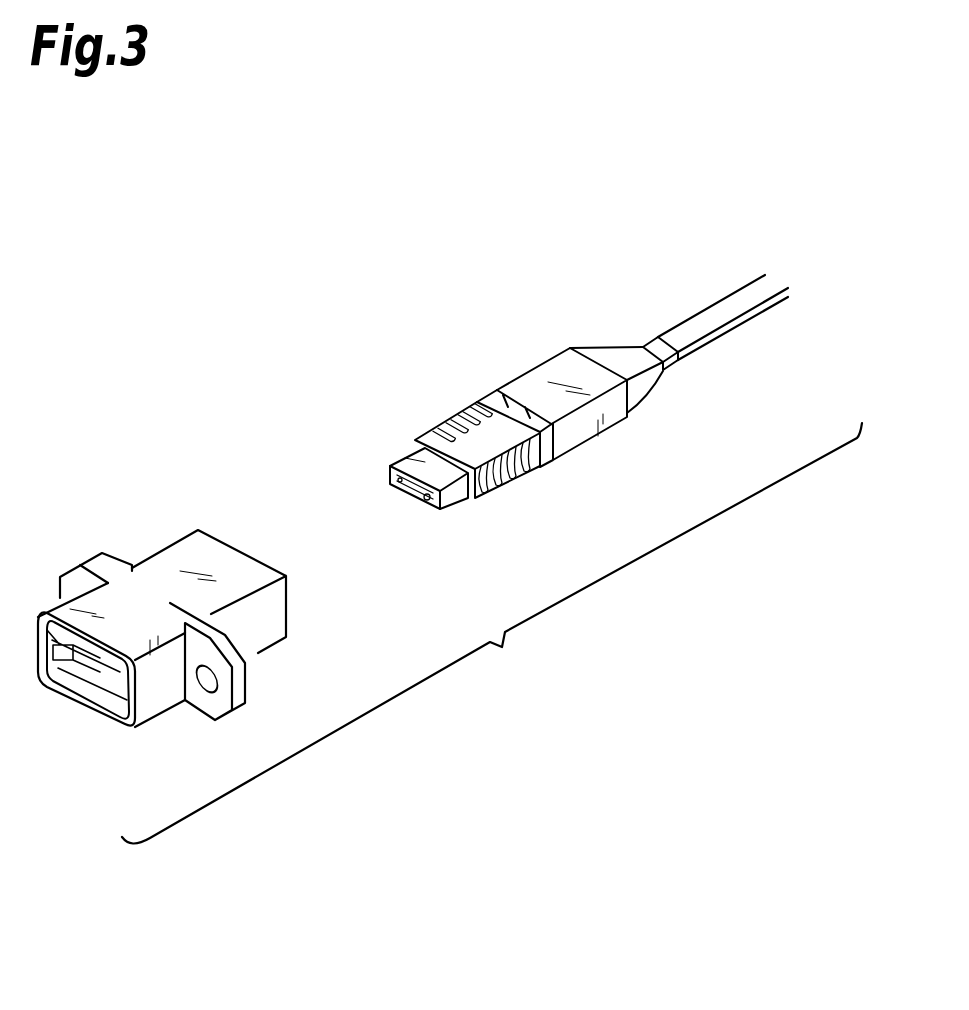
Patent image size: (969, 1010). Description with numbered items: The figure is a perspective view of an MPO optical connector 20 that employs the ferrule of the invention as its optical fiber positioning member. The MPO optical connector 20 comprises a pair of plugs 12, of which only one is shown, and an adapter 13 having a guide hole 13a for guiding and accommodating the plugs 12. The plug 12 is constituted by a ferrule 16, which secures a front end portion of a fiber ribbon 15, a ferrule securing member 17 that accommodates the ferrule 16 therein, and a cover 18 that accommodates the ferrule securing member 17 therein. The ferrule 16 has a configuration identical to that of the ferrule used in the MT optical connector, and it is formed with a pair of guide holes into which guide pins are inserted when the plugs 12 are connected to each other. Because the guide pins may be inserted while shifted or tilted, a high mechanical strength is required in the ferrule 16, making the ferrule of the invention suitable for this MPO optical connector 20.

The MPO optical connector 20 is at (387, 290).
The plug 12 is at (547, 330).
The adapter 13 is at (186, 540).
The guide hole 13a is at (110, 682).
The fiber ribbon 15 is at (713, 310).
The ferrule 16 is at (390, 481).
The ferrule securing member 17 is at (442, 475).
The cover 18 is at (593, 425).